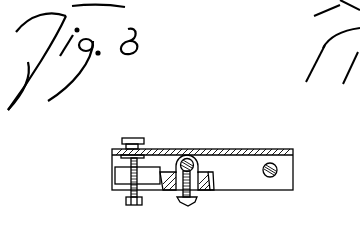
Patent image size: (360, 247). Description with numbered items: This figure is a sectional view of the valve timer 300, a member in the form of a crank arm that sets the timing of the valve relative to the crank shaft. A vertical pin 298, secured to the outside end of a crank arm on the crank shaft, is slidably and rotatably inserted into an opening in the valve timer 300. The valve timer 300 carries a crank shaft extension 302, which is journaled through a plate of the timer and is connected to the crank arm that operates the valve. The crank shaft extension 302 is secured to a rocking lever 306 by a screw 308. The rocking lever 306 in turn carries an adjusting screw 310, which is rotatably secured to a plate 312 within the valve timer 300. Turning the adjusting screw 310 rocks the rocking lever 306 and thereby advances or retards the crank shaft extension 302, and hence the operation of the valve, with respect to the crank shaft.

The vertical pin 298 is at (278, 170).
The valve timer 300 is at (251, 150).
The crank shaft extension 302 is at (192, 156).
The rocking lever 306 is at (214, 173).
The screw 308 is at (197, 199).
The adjusting screw 310 is at (123, 192).
The plate 312 is at (166, 149).